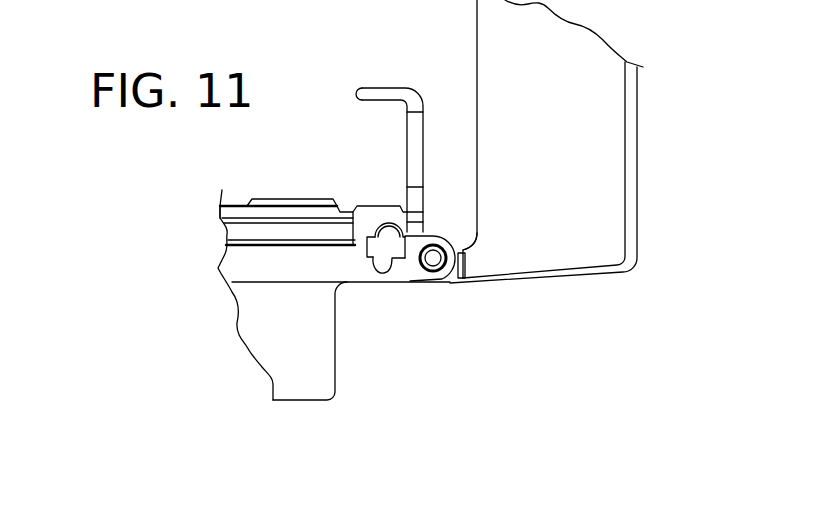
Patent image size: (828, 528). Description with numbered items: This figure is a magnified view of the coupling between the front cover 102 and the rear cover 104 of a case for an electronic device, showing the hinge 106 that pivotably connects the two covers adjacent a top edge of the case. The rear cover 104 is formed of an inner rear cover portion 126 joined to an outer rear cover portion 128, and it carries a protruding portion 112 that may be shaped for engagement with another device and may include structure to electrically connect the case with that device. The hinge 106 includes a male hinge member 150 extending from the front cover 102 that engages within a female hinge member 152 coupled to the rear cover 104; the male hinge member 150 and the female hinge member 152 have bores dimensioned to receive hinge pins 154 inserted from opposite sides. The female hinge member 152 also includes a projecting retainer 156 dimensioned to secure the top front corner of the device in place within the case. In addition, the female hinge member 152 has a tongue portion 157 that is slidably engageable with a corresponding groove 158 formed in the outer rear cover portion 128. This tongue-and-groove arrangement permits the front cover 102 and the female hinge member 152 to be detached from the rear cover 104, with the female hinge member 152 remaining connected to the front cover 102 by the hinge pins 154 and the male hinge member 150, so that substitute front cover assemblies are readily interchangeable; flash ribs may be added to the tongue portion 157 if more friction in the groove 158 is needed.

The front cover 102 is at (637, 147).
The rear cover 104 is at (230, 242).
The hinge 106 is at (455, 310).
The protruding portion 112 is at (305, 400).
The inner rear cover portion 126 is at (220, 212).
The outer rear cover portion 128 is at (220, 270).
The male hinge member 150 is at (440, 272).
The female hinge member 152 is at (433, 233).
The hinge pins 154 is at (427, 258).
The projecting retainer 156 is at (383, 88).
The tongue portion 157 is at (387, 270).
The groove 158 is at (373, 232).